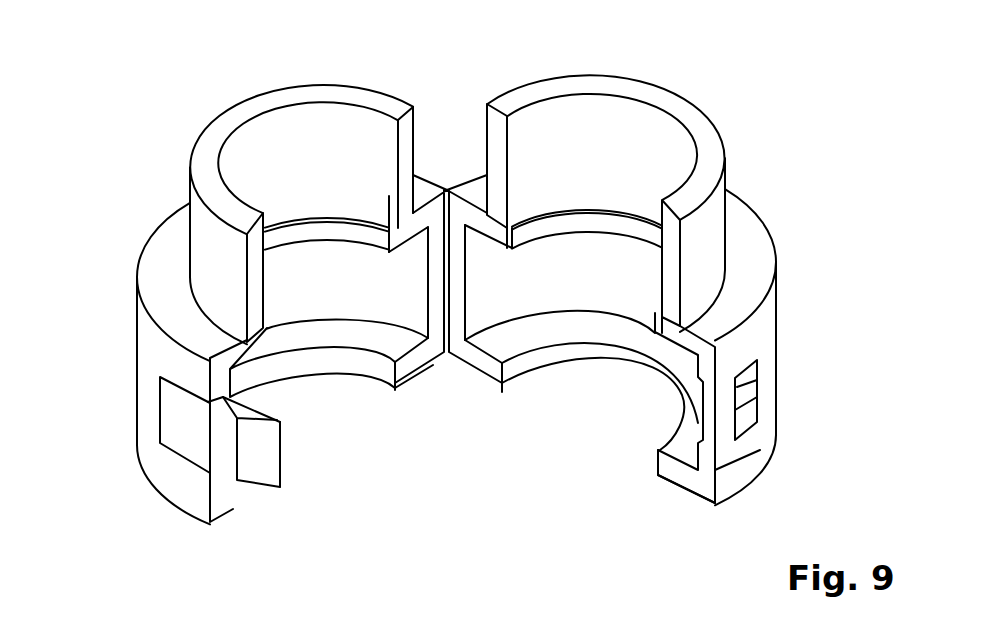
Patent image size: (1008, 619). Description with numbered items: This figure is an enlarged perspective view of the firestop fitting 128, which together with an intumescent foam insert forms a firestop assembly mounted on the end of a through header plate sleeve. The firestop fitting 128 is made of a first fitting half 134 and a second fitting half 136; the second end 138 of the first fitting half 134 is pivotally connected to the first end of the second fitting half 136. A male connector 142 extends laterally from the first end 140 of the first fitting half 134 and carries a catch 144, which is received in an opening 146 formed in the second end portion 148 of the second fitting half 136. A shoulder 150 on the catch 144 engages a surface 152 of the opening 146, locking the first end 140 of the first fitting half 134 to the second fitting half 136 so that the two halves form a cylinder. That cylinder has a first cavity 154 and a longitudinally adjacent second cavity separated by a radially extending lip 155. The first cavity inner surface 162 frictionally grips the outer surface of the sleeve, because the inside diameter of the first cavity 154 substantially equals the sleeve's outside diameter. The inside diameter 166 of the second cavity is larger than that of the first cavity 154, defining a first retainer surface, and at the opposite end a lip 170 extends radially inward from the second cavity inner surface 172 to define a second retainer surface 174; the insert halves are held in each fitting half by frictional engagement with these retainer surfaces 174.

The firestop fitting 128 is at (178, 78).
The first fitting half 134 is at (137, 312).
The second fitting half 136 is at (775, 310).
The second end of the first fitting half 138 is at (397, 392).
The first end of the first fitting half 140 is at (222, 508).
The male connector 142 is at (270, 405).
The catch 144 is at (252, 477).
The opening 146 is at (747, 407).
The second end portion of the second fitting half 148 is at (493, 243).
The shoulder 150 is at (238, 440).
The surface of the opening 152 is at (748, 385).
The first cavity 154 is at (622, 140).
The radially extending lip 155 is at (584, 157).
The first cavity inner surface 162 is at (320, 170).
The inside diameter of the second cavity 166 is at (598, 297).
The lip 170 is at (662, 465).
The second cavity inner surface 172 is at (348, 292).
The second retainer surface 174 is at (520, 342).